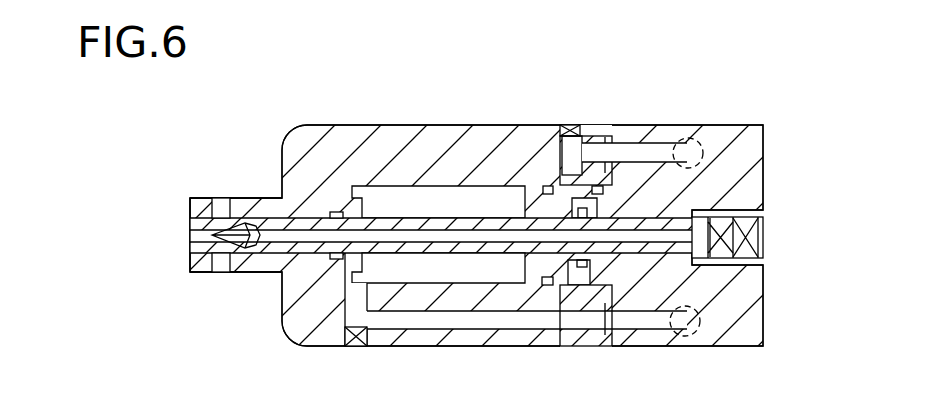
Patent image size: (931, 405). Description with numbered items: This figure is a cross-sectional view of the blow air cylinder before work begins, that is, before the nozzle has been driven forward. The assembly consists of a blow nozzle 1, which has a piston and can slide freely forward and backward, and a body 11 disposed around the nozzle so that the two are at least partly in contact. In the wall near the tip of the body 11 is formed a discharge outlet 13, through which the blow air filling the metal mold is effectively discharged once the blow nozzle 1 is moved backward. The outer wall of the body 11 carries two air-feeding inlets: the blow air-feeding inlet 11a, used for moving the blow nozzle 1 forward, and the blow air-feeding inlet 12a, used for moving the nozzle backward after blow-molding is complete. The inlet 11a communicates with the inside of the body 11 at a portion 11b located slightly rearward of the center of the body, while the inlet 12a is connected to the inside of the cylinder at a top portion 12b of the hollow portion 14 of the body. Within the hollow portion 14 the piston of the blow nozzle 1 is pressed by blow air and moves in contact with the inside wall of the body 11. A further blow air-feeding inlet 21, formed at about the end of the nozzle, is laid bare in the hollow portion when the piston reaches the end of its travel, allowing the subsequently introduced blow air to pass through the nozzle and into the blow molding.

The blow nozzle 1 is at (425, 213).
The body 11 is at (381, 118).
The blow air-feeding inlet 11a is at (697, 150).
The portion 11b is at (570, 175).
The blow air-feeding inlet 12a is at (697, 317).
The top portion 12b is at (363, 287).
The discharge outlet 13 is at (223, 197).
The hollow portion 14 is at (470, 267).
The blow air-feeding inlet 21 is at (718, 218).